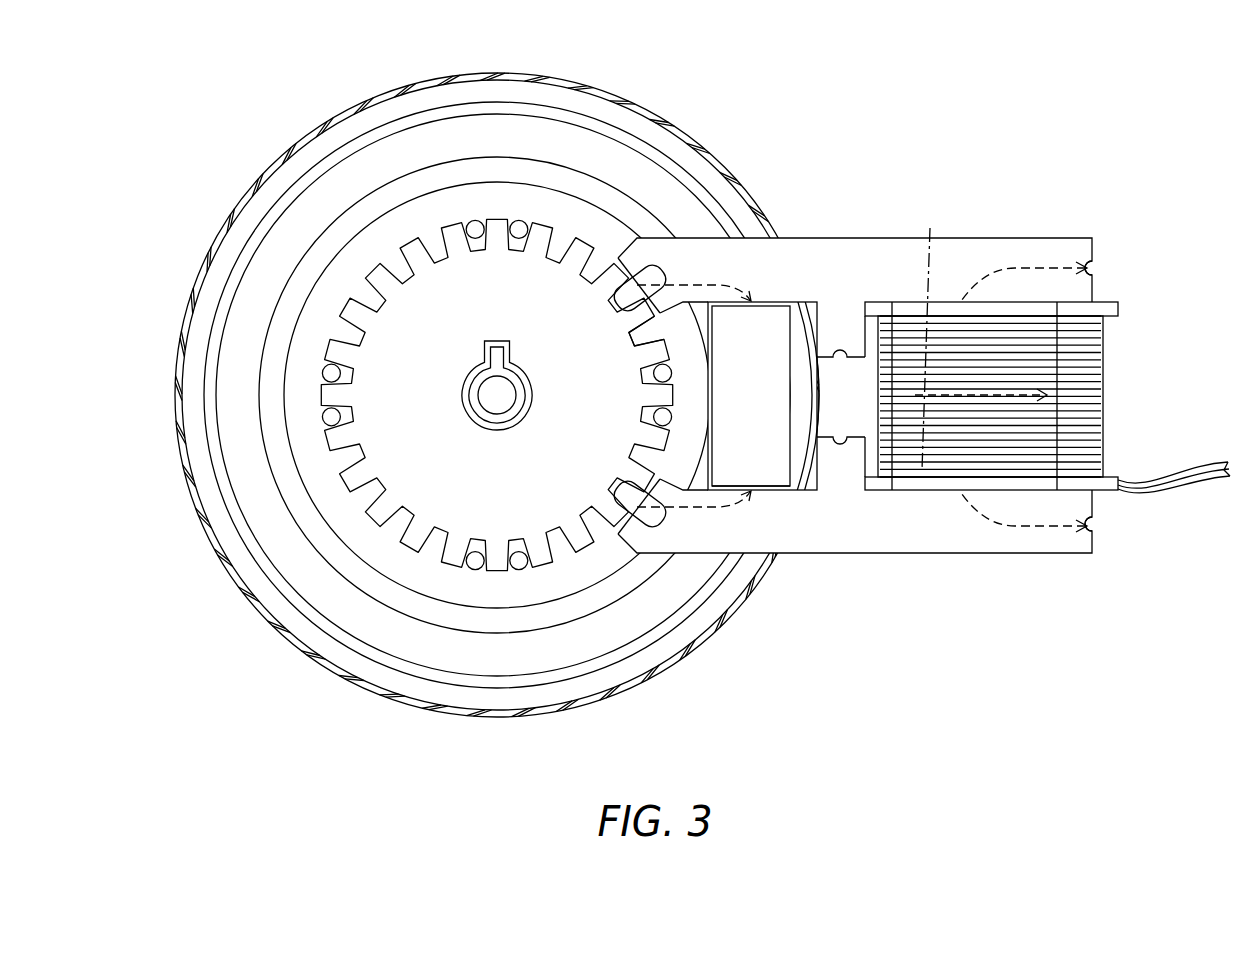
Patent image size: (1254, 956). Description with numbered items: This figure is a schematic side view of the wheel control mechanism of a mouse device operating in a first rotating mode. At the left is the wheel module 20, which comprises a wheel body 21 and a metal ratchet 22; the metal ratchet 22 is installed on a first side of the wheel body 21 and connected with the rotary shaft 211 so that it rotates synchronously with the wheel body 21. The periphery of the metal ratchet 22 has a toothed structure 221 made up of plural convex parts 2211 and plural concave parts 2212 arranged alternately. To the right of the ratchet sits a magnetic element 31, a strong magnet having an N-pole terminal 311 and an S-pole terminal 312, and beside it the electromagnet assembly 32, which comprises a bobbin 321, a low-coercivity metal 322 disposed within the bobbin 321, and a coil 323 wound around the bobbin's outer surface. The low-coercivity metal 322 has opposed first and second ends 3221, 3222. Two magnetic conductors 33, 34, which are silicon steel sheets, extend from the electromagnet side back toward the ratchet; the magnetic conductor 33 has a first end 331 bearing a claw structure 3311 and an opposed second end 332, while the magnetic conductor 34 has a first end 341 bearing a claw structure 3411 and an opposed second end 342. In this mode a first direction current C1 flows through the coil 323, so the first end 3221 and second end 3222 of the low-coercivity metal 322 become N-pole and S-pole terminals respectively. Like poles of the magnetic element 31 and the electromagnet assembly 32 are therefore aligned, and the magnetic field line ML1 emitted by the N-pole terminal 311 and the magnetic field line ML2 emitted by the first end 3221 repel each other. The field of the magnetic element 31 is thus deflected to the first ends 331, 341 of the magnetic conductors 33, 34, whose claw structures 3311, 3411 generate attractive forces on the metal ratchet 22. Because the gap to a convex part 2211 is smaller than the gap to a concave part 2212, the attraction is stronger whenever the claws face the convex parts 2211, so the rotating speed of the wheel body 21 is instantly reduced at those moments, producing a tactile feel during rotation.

The wheel module 20 is at (192, 292).
The wheel body 21 is at (270, 190).
The metal ratchet 22 is at (435, 293).
The toothed structure 221 is at (453, 222).
The rotary shaft 211 is at (490, 393).
The convex parts 2211 is at (330, 445).
The concave parts 2212 is at (368, 500).
The magnetic element 31 is at (786, 409).
The N-pole terminal 311 is at (752, 318).
The S-pole terminal 312 is at (753, 475).
The electromagnet assembly 32 is at (1047, 398).
The bobbin 321 is at (1118, 312).
The low-coercivity metal 322 is at (1105, 388).
The coil 323 is at (1107, 432).
The first end 3221 is at (1025, 318).
The second end 3222 is at (1022, 490).
The magnetic conductor 33 is at (826, 174).
The first end 331 is at (667, 252).
The claw structure 3311 is at (630, 272).
The second end 332 is at (1083, 262).
The magnetic conductor 34 is at (827, 619).
The first end 341 is at (665, 545).
The claw structure 3411 is at (640, 520).
The second end 342 is at (1075, 553).
The first direction current C1 is at (929, 228).
The magnetic field line ML1 is at (697, 275).
The magnetic field line ML2 is at (975, 292).